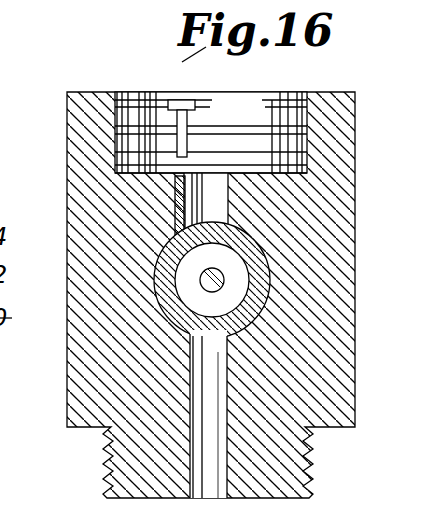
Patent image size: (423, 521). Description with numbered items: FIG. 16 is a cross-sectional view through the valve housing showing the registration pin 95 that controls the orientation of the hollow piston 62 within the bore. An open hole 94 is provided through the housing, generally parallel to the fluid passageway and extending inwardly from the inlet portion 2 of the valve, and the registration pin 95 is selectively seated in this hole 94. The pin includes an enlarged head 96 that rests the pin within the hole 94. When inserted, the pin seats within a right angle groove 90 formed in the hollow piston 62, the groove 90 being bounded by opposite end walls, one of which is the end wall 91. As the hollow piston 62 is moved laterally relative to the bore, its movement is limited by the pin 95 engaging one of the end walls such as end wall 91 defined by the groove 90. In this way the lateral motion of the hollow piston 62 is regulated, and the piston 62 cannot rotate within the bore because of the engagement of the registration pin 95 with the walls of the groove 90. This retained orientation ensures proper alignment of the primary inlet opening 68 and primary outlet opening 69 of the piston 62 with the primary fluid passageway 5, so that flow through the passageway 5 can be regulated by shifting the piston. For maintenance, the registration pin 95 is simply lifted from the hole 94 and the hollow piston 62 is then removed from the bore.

The inlet portion 2 is at (293, 107).
The primary fluid passageway 5 is at (220, 381).
The hollow piston 62 is at (264, 308).
The primary inlet opening 68 is at (224, 224).
The primary outlet opening 69 is at (190, 328).
The right angle groove 90 is at (165, 252).
The end wall 91 is at (171, 239).
The open hole 94 is at (177, 190).
The registration pin 95 is at (190, 130).
The enlarged head 96 is at (178, 100).